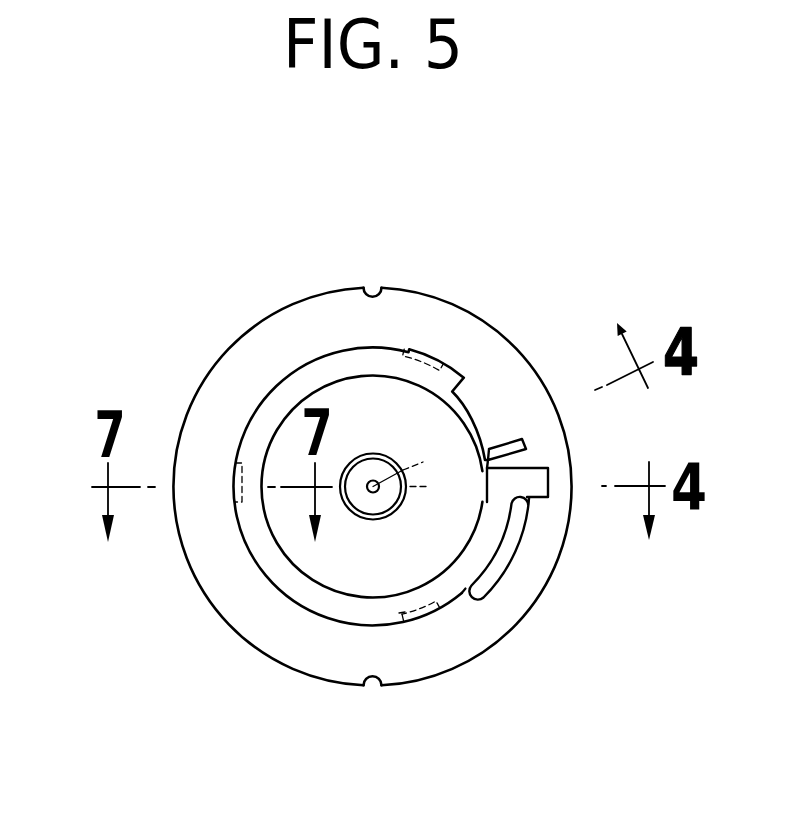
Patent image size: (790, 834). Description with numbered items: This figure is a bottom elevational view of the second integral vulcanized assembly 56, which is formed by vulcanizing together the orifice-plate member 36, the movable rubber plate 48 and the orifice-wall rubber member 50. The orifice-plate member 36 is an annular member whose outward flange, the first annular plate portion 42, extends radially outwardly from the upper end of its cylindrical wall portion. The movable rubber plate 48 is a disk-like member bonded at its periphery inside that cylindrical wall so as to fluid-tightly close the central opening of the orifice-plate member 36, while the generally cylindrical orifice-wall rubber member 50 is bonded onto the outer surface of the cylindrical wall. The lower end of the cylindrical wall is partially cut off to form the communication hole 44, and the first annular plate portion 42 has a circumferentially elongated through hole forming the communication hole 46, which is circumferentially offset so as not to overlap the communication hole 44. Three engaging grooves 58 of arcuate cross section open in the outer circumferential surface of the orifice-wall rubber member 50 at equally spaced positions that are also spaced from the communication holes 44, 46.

The orifice-plate member 36 is at (197, 352).
The first annular plate portion 42 is at (207, 564).
The communication hole 44 is at (493, 452).
The communication hole 46 is at (488, 590).
The movable rubber plate 48 is at (348, 573).
The orifice-wall rubber member 50 is at (283, 582).
The second integral vulcanized assembly 56 is at (289, 266).
The engaging groove 58 is at (435, 680).